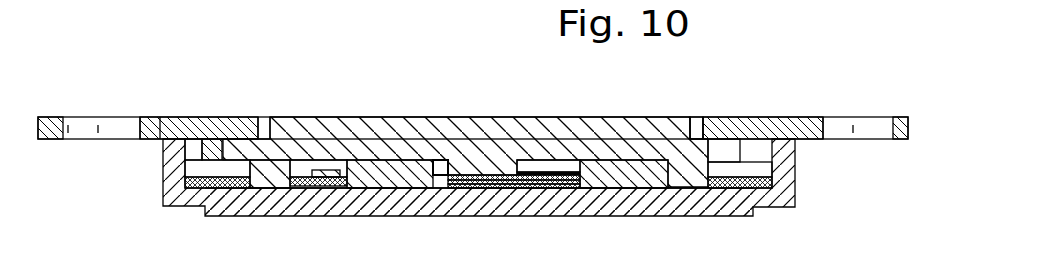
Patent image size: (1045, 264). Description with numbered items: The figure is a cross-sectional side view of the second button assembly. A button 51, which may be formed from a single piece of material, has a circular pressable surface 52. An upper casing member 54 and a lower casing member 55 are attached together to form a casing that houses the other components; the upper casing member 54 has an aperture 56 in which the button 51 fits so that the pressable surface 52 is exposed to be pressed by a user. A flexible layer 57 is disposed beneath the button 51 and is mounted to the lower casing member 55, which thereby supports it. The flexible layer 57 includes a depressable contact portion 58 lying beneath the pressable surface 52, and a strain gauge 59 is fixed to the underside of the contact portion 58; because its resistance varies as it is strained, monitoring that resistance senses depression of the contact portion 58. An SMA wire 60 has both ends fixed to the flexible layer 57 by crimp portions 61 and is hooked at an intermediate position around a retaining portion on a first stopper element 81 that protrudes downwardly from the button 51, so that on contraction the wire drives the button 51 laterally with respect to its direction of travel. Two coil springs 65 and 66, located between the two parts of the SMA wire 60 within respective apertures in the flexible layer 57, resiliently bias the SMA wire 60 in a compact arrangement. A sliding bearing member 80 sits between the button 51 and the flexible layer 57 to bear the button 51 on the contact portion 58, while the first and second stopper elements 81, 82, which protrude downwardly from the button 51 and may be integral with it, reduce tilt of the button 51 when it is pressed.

The button 51 is at (473, 132).
The pressable surface 52 is at (498, 117).
The upper casing member 54 is at (787, 118).
The lower casing member 55 is at (795, 180).
The aperture 56 is at (693, 125).
The flexible layer 57 is at (223, 162).
The contact portion 58 is at (513, 193).
The strain gauge 59 is at (563, 188).
The SMA wire 60 is at (533, 157).
The crimp portions 61 is at (328, 170).
The coil spring 65 is at (623, 170).
The coil spring 66 is at (368, 178).
The sliding bearing member 80 is at (459, 176).
The first stopper element 81 is at (693, 190).
The second stopper element 82 is at (267, 178).